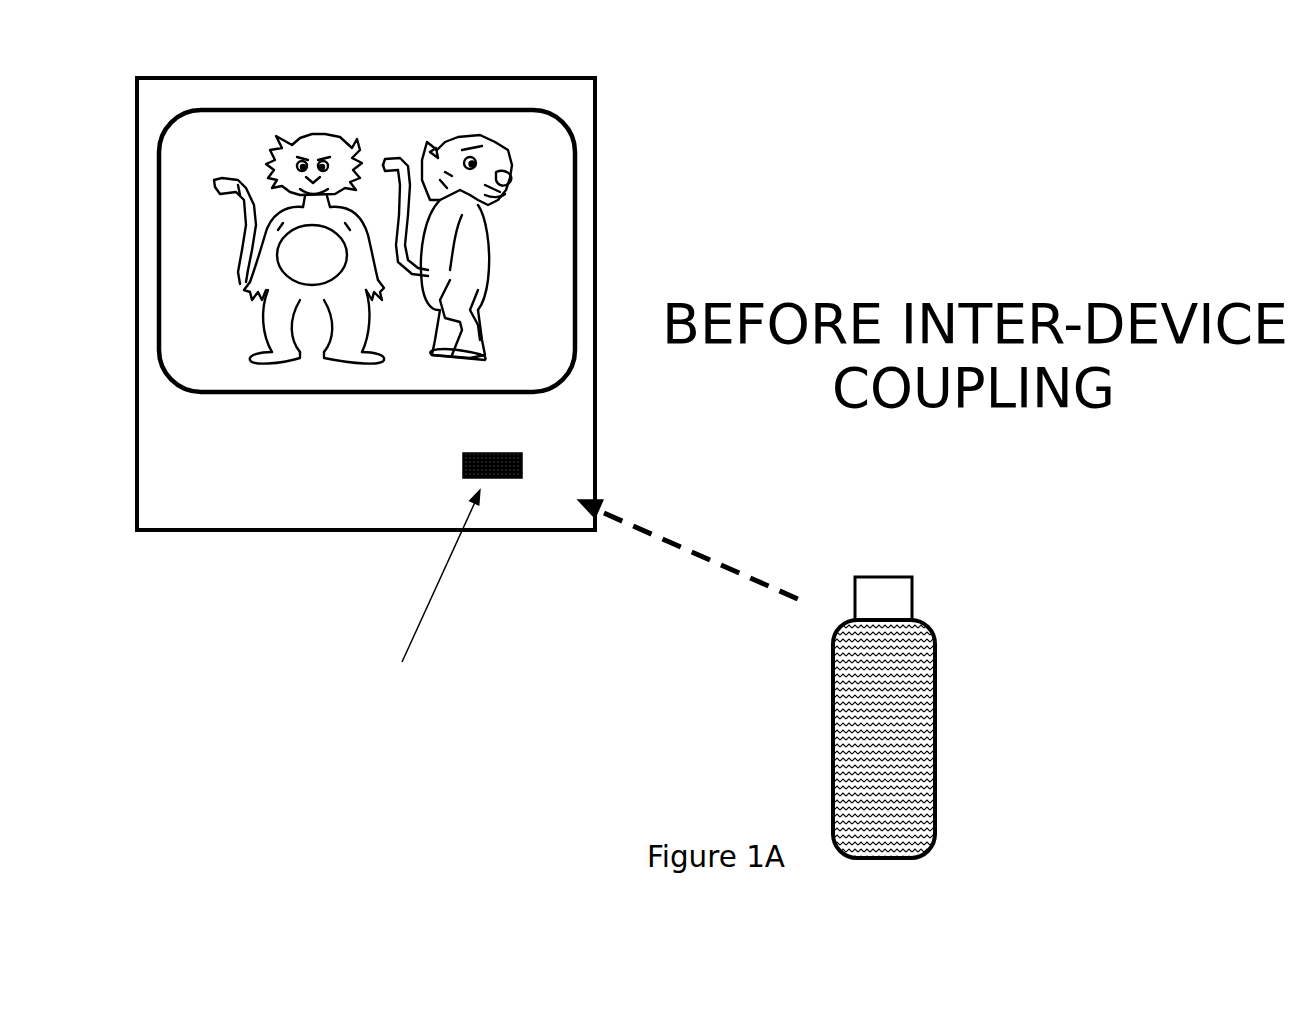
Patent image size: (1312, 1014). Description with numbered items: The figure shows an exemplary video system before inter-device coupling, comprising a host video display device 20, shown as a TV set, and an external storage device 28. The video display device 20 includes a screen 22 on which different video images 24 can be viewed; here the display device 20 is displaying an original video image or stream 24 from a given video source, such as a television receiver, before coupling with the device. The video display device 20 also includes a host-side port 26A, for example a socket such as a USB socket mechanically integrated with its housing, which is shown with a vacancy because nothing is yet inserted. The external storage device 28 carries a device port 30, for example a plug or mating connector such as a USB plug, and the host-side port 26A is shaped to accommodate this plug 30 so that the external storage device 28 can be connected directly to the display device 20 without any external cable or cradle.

The video display device 20 is at (573, 78).
The screen 22 is at (575, 218).
The video images 24 is at (360, 142).
The host-side port 26A is at (463, 466).
The external storage device 28 is at (832, 718).
The device port 30 is at (912, 595).